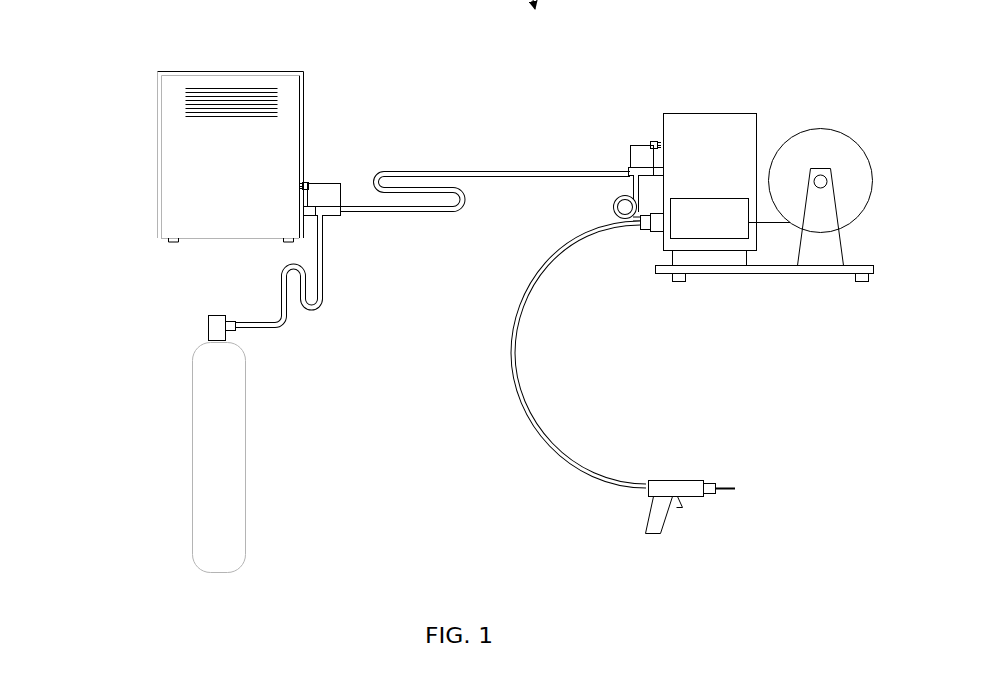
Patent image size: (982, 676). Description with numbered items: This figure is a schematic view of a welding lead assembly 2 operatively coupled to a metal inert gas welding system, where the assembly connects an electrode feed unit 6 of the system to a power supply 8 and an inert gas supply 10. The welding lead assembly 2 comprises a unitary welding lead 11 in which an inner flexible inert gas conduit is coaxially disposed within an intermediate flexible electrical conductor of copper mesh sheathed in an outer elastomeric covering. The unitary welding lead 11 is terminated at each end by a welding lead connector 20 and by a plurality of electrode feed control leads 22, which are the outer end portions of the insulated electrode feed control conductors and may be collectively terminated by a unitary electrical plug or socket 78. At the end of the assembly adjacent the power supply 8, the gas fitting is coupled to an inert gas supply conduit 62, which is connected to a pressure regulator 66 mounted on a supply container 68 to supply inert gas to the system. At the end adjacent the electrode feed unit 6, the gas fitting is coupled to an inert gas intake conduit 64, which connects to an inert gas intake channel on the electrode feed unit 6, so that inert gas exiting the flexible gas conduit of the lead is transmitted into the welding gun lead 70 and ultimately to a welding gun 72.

The welding lead assembly 2 is at (452, 125).
The electrode feed unit 6 is at (770, 60).
The power supply 8 is at (120, 125).
The inert gas supply 10 is at (190, 507).
The unitary welding lead 11 is at (467, 171).
The welding lead connector 20 is at (334, 215).
The electrode feed control leads 22 is at (345, 195).
The inert gas supply conduit 62 is at (325, 312).
The inert gas intake conduit 64 is at (612, 199).
The pressure regulator 66 is at (228, 336).
The supply container 68 is at (245, 530).
The welding gun lead 70 is at (518, 388).
The welding gun 72 is at (678, 476).
The unitary electrical plug or socket 78 is at (312, 180).